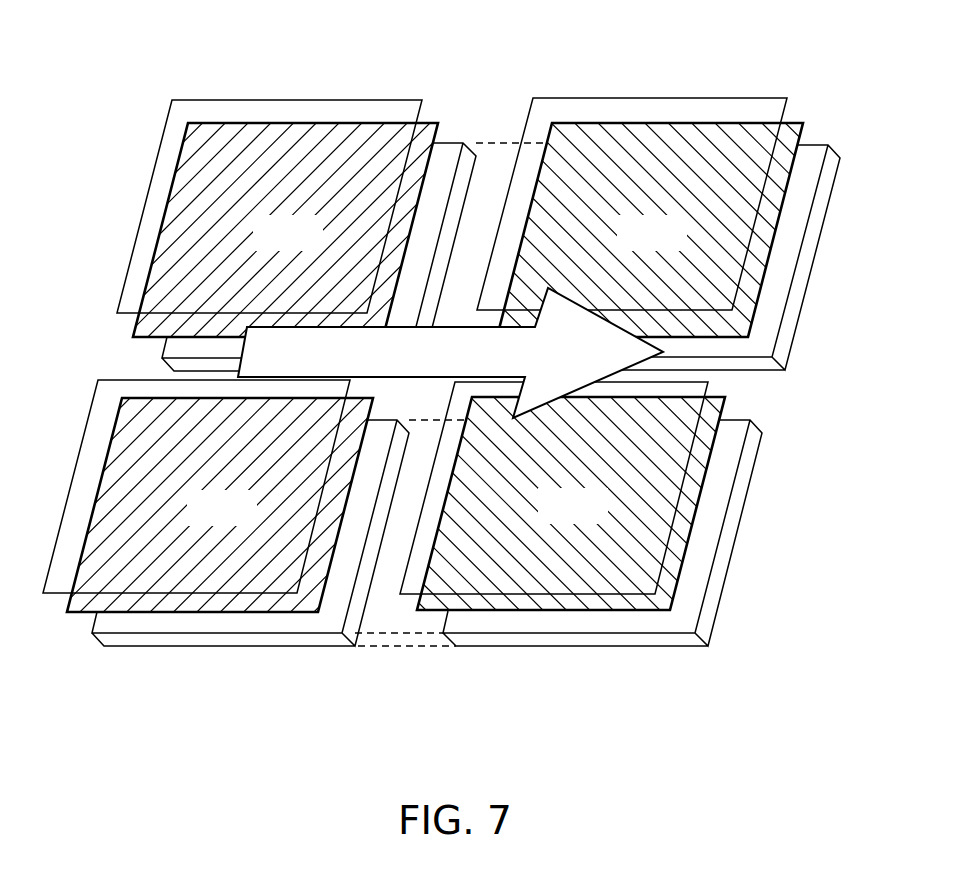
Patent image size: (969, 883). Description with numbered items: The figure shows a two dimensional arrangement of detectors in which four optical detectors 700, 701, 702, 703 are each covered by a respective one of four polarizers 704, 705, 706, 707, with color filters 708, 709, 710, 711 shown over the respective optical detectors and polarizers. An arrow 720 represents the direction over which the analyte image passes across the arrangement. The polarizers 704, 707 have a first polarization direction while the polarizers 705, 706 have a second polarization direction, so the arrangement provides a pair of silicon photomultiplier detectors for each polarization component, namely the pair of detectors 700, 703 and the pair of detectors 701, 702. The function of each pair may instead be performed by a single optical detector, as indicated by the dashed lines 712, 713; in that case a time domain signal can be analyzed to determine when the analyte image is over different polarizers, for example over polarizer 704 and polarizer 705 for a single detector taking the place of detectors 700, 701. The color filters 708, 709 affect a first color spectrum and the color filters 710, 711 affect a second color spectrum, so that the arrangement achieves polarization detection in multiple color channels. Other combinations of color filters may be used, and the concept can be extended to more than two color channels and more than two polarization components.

The optical detector 700 is at (163, 648).
The optical detector 701 is at (523, 648).
The optical detector 702 is at (826, 144).
The optical detector 703 is at (463, 142).
The polarizer 704 is at (78, 614).
The polarizer 705 is at (430, 613).
The polarizer 706 is at (787, 122).
The polarizer 707 is at (436, 121).
The color filter 708 is at (51, 594).
The color filter 709 is at (402, 581).
The color filter 710 is at (717, 98).
The color filter 711 is at (377, 100).
The dashed line 712 is at (362, 648).
The dashed line 713 is at (498, 142).
The arrow 720 is at (303, 352).